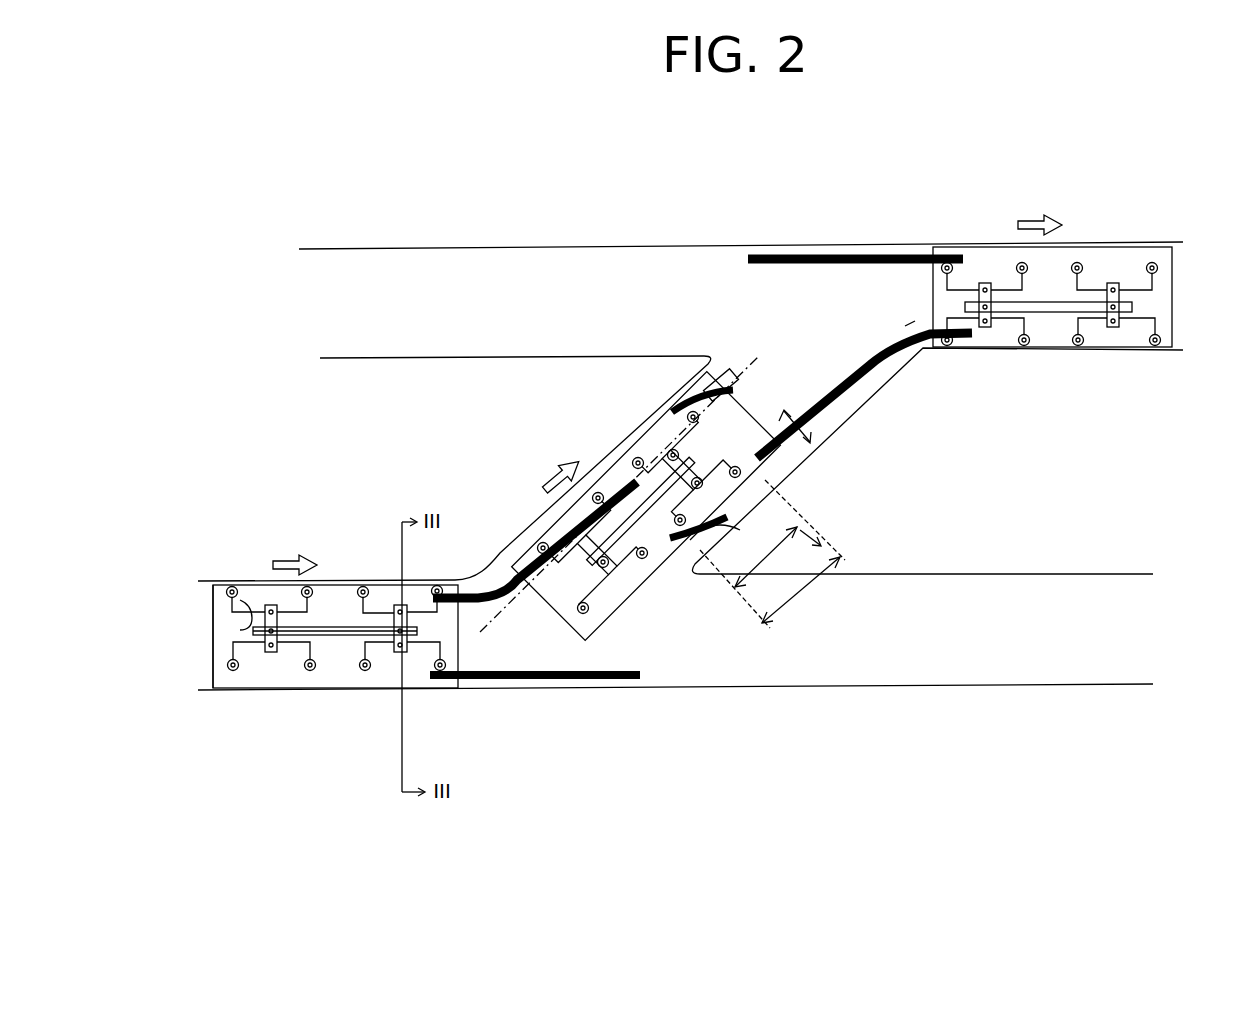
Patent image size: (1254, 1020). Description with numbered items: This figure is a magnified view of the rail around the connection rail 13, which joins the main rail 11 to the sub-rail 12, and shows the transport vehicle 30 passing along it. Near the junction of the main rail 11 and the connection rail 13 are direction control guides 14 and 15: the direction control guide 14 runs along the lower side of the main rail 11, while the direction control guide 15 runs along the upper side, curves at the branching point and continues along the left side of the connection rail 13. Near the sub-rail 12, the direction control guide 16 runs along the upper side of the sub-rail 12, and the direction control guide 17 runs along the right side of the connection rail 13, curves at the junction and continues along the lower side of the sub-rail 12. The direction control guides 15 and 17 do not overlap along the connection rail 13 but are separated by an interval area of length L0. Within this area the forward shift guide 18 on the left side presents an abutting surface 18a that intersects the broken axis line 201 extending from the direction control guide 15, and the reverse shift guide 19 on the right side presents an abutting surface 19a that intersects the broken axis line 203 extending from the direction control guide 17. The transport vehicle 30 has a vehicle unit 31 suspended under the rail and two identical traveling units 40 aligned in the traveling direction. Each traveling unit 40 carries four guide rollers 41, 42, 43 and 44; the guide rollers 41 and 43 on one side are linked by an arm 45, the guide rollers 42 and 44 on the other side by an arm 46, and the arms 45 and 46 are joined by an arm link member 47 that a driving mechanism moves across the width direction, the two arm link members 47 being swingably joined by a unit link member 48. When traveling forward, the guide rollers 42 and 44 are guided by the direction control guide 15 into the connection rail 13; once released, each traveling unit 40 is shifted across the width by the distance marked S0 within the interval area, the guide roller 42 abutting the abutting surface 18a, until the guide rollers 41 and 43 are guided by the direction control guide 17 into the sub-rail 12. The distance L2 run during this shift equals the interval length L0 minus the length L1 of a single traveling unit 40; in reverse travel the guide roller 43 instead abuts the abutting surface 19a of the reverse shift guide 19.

The main rail 11 is at (920, 690).
The sub-rail 12 is at (514, 249).
The connection rail 13 is at (906, 423).
The direction control guide 14 is at (583, 652).
The direction control guide 15 is at (510, 615).
The direction control guide 16 is at (845, 255).
The direction control guide 17 is at (934, 349).
The forward shift guide 18 is at (683, 402).
The abutting surface 18a is at (728, 392).
The reverse shift guide 19 is at (729, 540).
The abutting surface 19a is at (703, 560).
The broken axis line 201 is at (755, 352).
The broken axis line 203 is at (907, 326).
The transport vehicle 30 is at (160, 550).
The vehicle unit 31 is at (212, 610).
The traveling unit 40 is at (990, 260).
The guide roller 41 is at (770, 484).
The guide roller 42 is at (662, 335).
The guide roller 43 is at (232, 662).
The guide roller 44 is at (231, 584).
The arm 45 is at (265, 652).
The arm 46 is at (246, 590).
The arm link member 47 is at (280, 652).
The unit link member 48 is at (333, 640).
The gap dimension S0 is at (806, 426).
The length of interval area L0 is at (772, 554).
The length of a single traveling unit L1 is at (766, 557).
The running distance during shift operation L2 is at (814, 545).